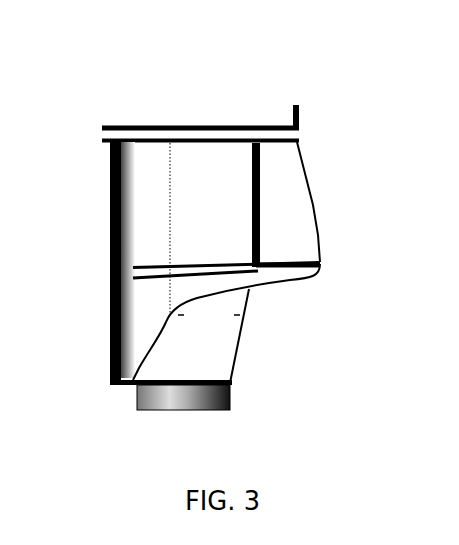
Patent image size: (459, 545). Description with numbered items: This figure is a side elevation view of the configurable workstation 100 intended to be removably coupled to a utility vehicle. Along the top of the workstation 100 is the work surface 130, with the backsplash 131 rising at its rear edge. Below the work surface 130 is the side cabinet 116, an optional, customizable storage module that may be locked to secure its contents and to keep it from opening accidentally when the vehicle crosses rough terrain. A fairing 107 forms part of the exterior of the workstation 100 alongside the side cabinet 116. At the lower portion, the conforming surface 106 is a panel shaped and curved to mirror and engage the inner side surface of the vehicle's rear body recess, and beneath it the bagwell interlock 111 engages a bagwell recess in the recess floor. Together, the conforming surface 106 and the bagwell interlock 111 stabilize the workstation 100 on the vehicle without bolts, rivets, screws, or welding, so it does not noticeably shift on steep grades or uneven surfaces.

The configurable workstation 100 is at (325, 79).
The work surface 130 is at (145, 123).
The backsplash 131 is at (293, 115).
The side cabinet 116 is at (140, 210).
The fairing 107 is at (127, 333).
The conforming surface 106 is at (213, 343).
The bagwell interlock 111 is at (218, 412).